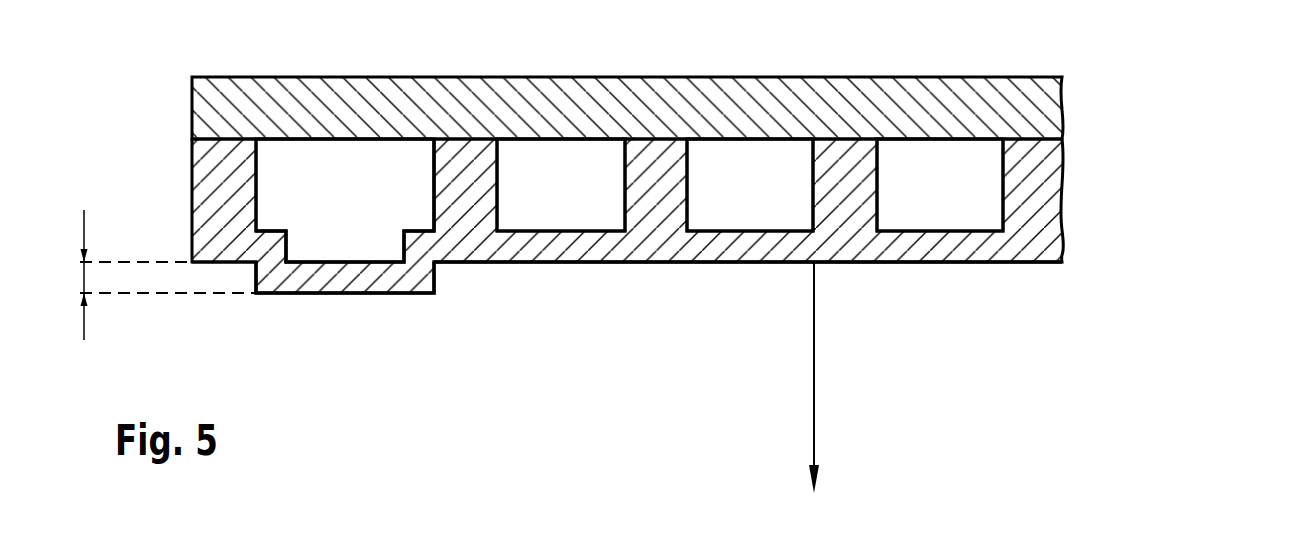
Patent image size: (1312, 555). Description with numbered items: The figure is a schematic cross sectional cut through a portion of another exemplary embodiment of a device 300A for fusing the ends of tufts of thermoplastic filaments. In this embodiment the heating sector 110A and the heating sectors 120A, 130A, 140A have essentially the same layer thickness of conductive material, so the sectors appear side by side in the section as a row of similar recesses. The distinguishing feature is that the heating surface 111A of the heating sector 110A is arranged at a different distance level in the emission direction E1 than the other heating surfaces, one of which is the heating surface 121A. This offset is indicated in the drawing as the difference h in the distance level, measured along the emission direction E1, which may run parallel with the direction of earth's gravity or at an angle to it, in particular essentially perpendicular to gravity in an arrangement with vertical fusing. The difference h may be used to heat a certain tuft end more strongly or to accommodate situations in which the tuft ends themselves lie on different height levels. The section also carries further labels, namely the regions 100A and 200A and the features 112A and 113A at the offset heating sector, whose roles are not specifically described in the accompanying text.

The carrier body / substrate 100A is at (1048, 233).
The cover plate 200A is at (1048, 107).
The device for fusing the ends of tufts 300A is at (745, 185).
The heating sector 110A is at (330, 162).
The recess cavity 112A is at (384, 165).
The protrusion floor wall 113A is at (318, 277).
The heating surface 111A is at (375, 298).
The heating sector 120A is at (553, 163).
The heating surface 121A is at (563, 267).
The heating sector 130A is at (742, 163).
The heating sector 140A is at (932, 164).
The emission direction E1 is at (827, 377).
The difference in distance level h is at (160, 275).